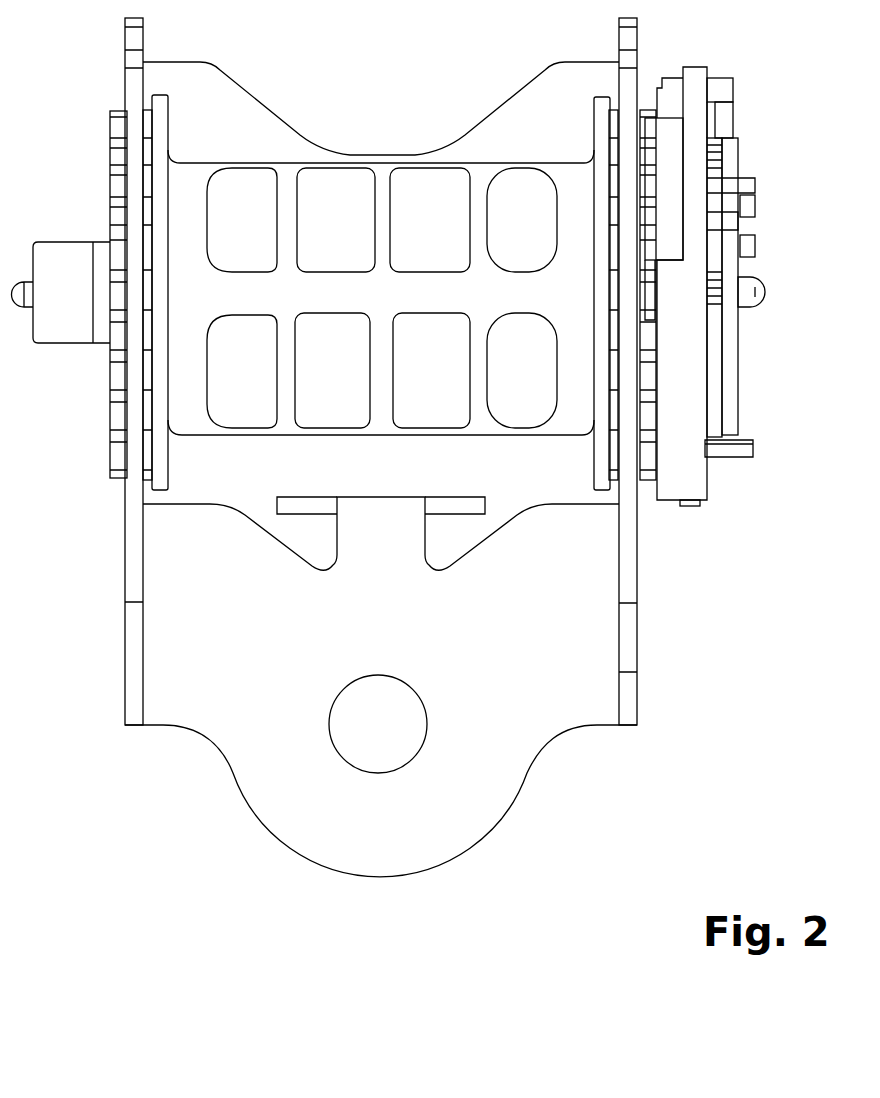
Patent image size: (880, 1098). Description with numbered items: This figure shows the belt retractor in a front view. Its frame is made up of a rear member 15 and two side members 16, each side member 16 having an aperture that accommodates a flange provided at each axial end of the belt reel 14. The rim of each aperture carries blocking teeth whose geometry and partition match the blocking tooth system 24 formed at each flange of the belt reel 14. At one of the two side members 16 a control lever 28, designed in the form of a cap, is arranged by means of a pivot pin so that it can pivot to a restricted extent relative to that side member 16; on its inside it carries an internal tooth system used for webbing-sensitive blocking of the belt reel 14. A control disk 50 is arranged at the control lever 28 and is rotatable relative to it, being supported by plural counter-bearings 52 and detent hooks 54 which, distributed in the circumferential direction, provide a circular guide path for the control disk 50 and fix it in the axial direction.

The belt reel 14 is at (290, 172).
The rear member 15 is at (483, 813).
The side member 16 is at (630, 637).
The blocking tooth system 24 is at (118, 147).
The control lever 28 is at (693, 488).
The control disk 50 is at (728, 377).
The counter-bearing 52 is at (713, 412).
The detent hook 54 is at (740, 443).